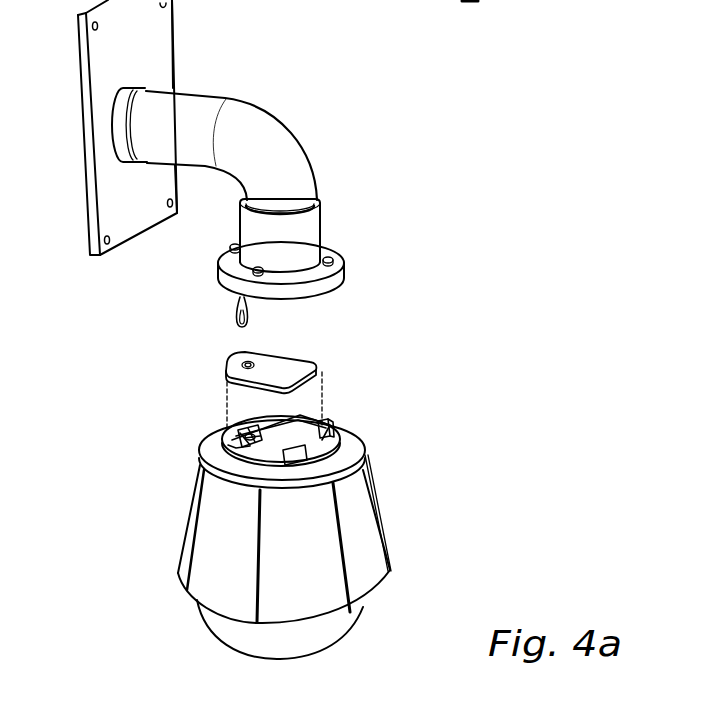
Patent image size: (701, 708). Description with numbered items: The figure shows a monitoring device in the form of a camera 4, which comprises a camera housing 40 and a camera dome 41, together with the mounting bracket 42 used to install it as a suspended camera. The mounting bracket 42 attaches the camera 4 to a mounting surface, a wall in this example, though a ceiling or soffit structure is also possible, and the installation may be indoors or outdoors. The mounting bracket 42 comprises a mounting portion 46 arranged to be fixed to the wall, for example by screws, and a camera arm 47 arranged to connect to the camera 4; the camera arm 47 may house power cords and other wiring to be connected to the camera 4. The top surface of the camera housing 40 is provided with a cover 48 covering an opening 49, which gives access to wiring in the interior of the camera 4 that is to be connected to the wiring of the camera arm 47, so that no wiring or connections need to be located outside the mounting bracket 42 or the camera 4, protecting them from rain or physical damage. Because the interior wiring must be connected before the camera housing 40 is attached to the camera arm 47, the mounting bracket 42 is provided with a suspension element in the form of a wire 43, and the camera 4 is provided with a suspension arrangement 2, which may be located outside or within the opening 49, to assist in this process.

The suspension arrangement 2 is at (245, 425).
The camera 4 is at (165, 468).
The camera housing 40 is at (353, 515).
The camera dome 41 is at (333, 632).
The mounting bracket 42 is at (360, 130).
The wire 43 is at (237, 318).
The mounting portion 46 is at (135, 50).
The camera arm 47 is at (247, 138).
The cover 48 is at (297, 365).
The opening 49 is at (300, 424).